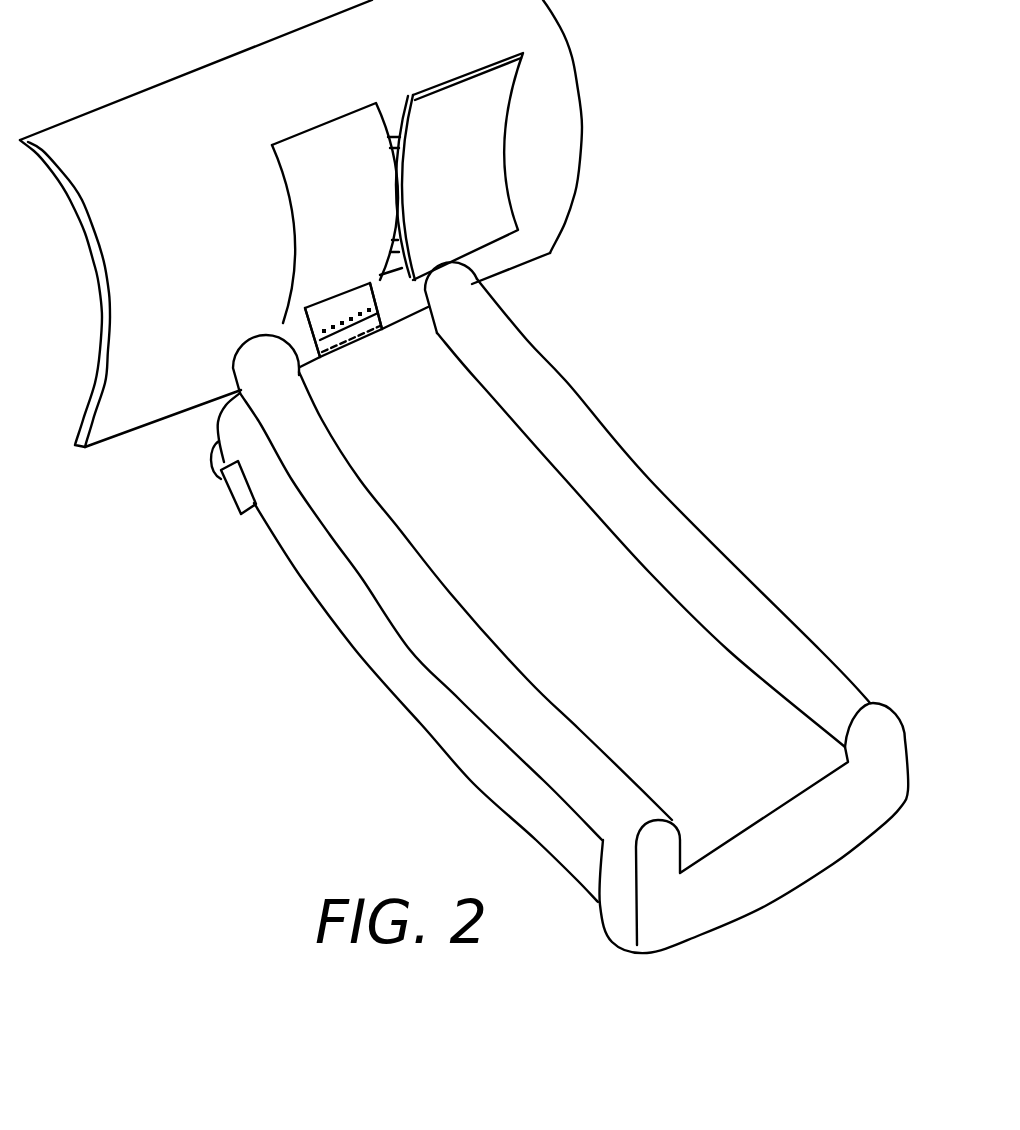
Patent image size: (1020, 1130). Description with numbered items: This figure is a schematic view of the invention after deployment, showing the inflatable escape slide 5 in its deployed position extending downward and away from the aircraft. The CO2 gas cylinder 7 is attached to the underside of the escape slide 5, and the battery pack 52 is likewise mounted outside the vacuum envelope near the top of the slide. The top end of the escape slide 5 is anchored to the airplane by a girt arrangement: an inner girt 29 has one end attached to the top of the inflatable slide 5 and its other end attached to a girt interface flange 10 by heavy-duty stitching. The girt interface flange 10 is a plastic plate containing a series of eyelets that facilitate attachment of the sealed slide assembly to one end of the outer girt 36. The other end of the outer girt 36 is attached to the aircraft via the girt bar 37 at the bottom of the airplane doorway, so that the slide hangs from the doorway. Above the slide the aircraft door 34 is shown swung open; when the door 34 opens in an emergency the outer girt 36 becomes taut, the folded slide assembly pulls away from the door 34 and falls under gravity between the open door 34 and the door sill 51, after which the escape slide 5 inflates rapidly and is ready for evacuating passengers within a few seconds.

The inflatable escape slide 5 is at (528, 474).
The CO2 gas cylinder 7 is at (216, 462).
The girt interface flange 10 is at (322, 273).
The inner girt 29 is at (413, 312).
The aircraft door 34 is at (504, 163).
The outer girt 36 is at (367, 284).
The girt bar 37 is at (303, 312).
The door sill 51 is at (290, 322).
The battery pack 52 is at (240, 500).